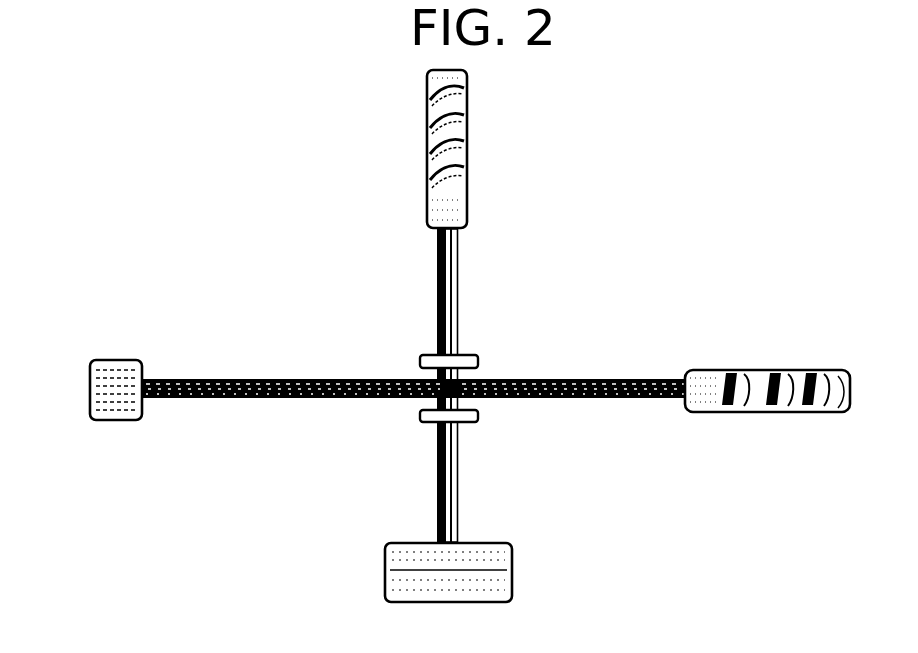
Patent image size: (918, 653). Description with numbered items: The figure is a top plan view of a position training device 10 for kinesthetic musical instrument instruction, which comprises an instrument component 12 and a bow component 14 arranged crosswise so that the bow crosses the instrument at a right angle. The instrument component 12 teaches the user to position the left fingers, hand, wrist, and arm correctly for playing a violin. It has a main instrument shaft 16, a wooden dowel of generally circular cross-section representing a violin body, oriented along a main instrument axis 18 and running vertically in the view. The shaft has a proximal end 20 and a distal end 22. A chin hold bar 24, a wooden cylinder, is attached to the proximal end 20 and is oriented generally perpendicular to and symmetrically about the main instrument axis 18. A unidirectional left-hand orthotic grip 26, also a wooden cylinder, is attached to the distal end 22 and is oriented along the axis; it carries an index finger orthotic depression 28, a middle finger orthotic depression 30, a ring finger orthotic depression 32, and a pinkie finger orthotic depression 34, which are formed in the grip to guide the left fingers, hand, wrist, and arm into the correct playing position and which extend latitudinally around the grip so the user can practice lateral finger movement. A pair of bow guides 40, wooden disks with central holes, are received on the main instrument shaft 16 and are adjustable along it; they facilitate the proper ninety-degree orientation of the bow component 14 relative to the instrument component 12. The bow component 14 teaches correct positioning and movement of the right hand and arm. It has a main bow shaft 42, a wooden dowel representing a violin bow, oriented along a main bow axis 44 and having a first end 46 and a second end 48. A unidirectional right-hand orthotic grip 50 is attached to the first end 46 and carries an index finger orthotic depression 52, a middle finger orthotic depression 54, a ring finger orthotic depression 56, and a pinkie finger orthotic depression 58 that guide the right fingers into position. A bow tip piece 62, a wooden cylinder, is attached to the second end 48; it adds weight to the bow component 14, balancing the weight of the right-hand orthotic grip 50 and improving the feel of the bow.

The position training device 10 is at (789, 99).
The instrument component 12 is at (458, 297).
The bow component 14 is at (267, 398).
The main instrument shaft 16 is at (458, 483).
The main instrument axis 18 is at (448, 605).
The proximal end 20 is at (463, 540).
The distal end 22 is at (462, 233).
The chin hold bar 24 is at (512, 570).
The left-hand orthotic grip 26 is at (427, 208).
The index finger orthotic depression 28 is at (473, 92).
The middle finger orthotic depression 30 is at (473, 128).
The ring finger orthotic depression 32 is at (473, 154).
The pinkie finger orthotic depression 34 is at (473, 179).
The bow guides 40 is at (478, 358).
The main bow shaft 42 is at (608, 398).
The main bow axis 44 is at (87, 392).
The first end 46 is at (680, 403).
The second end 48 is at (146, 405).
The right-hand orthotic grip 50 is at (713, 412).
The index finger orthotic depression 52 is at (738, 367).
The middle finger orthotic depression 54 is at (782, 367).
The ring finger orthotic depression 56 is at (815, 367).
The pinkie finger orthotic depression 58 is at (836, 415).
The bow tip piece 62 is at (110, 420).